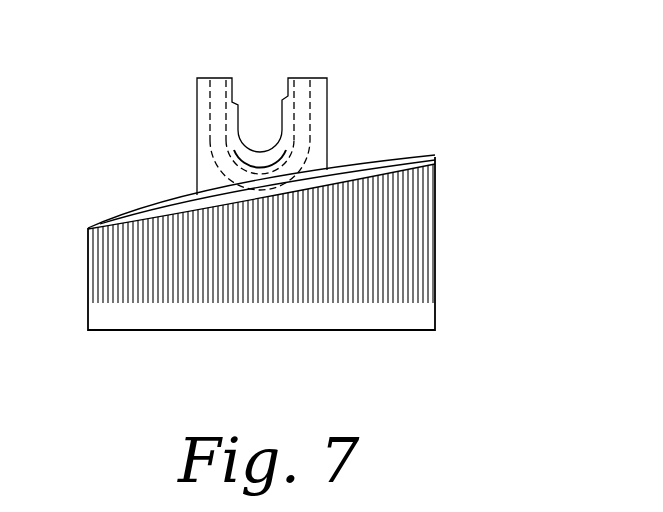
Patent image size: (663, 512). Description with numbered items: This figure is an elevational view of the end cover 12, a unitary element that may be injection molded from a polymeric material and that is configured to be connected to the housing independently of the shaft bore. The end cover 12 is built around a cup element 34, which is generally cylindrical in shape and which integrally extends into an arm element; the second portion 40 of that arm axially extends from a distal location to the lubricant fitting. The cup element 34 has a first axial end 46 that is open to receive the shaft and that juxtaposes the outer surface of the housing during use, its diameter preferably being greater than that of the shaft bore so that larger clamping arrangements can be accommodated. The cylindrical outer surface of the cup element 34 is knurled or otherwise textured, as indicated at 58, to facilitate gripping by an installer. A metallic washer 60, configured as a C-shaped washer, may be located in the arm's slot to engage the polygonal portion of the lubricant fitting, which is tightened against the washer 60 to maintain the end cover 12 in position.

The end cover 12 is at (402, 95).
The cup element 34 is at (463, 274).
The second portion 40 is at (328, 108).
The first axial end 46 is at (142, 213).
The knurled outer surface 58 is at (425, 192).
The metallic washer 60 is at (242, 110).